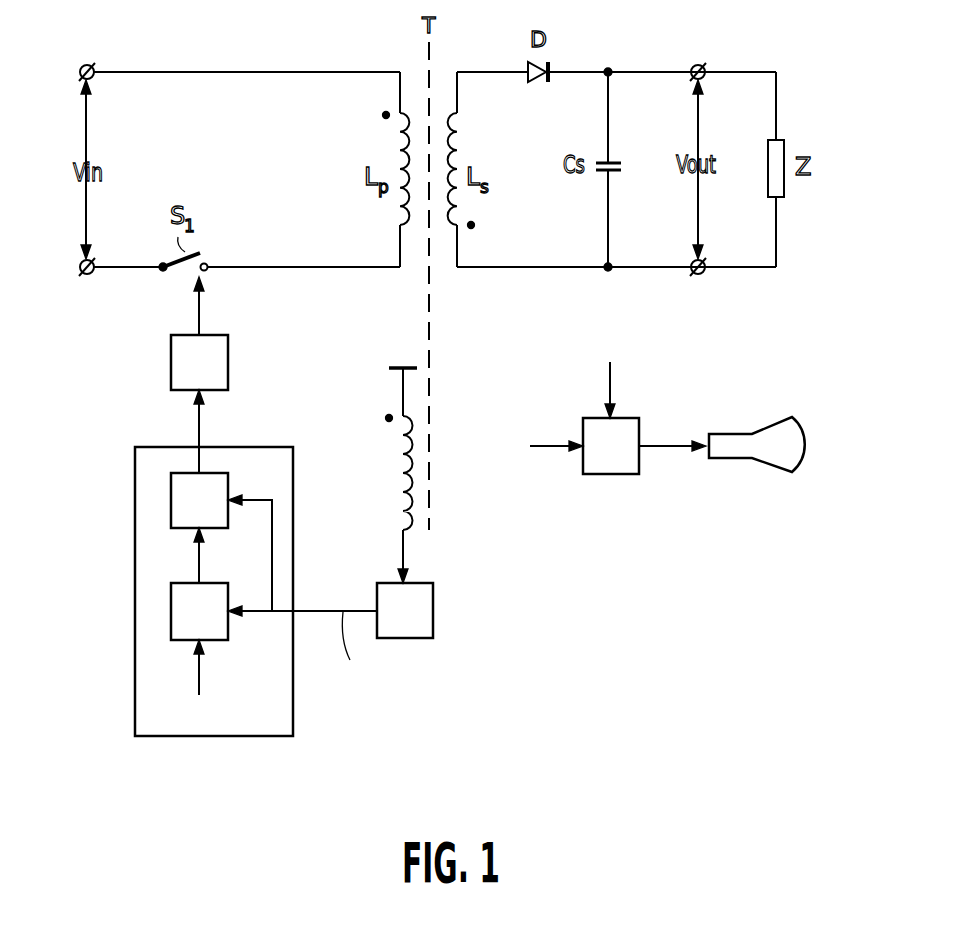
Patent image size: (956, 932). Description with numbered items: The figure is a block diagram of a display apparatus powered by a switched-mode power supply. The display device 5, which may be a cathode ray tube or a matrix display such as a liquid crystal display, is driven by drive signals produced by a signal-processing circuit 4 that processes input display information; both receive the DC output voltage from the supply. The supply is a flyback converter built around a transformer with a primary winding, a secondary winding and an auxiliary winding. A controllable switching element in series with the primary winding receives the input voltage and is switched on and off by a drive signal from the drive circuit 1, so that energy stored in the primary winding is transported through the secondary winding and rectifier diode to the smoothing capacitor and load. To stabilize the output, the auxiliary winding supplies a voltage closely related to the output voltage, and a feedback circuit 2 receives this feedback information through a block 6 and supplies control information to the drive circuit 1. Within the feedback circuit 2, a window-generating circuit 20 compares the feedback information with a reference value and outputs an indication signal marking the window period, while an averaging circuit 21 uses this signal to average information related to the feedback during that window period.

The drive circuit 1 is at (171, 360).
The feedback circuit 2 is at (186, 563).
The window-generating circuit 20 is at (171, 612).
The averaging circuit 21 is at (171, 502).
The signal-processing circuit 4 is at (615, 476).
The display device 5 is at (762, 427).
The measuring circuit 6 is at (433, 614).